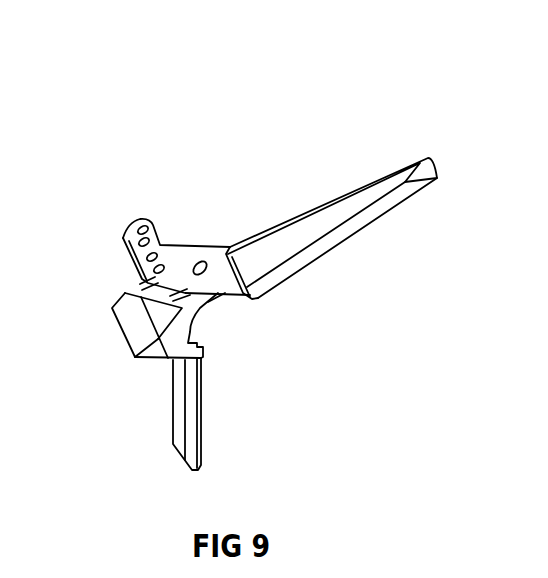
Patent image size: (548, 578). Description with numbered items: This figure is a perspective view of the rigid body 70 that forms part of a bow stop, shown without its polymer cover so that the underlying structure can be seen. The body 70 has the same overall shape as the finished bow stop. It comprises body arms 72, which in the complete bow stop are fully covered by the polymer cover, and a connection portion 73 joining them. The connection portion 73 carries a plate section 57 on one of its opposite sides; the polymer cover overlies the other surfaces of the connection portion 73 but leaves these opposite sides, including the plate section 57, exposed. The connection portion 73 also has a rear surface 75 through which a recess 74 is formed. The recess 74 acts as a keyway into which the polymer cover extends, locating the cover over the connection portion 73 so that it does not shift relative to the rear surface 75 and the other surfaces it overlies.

The body 70 is at (358, 144).
The body arms 72 is at (323, 228).
The plate section 57 is at (170, 257).
The connection portion 73 is at (170, 340).
The recess 74 is at (153, 312).
The rear surface 75 is at (130, 328).